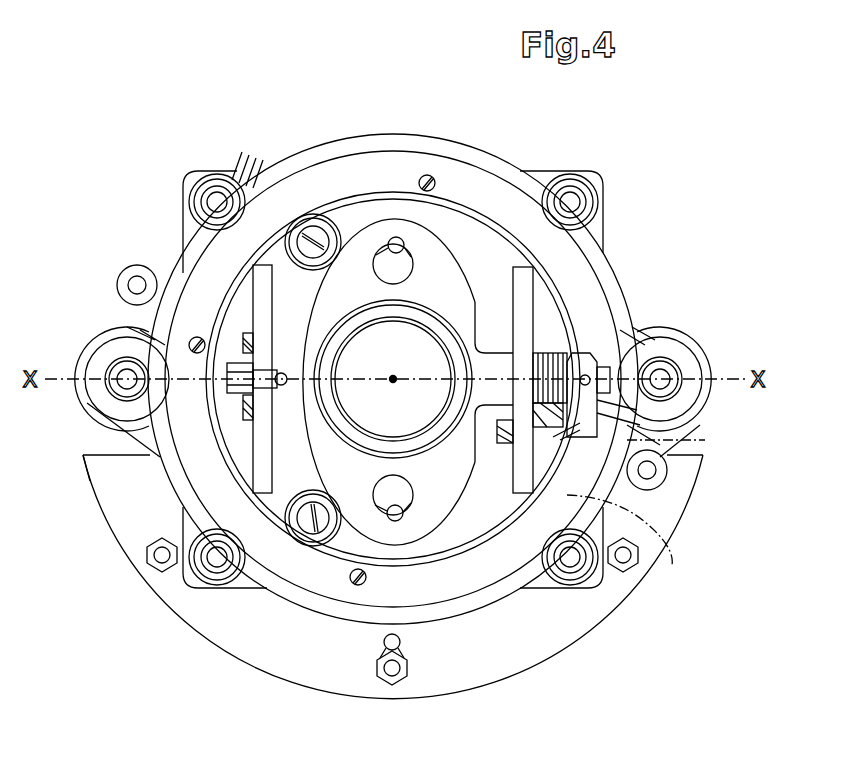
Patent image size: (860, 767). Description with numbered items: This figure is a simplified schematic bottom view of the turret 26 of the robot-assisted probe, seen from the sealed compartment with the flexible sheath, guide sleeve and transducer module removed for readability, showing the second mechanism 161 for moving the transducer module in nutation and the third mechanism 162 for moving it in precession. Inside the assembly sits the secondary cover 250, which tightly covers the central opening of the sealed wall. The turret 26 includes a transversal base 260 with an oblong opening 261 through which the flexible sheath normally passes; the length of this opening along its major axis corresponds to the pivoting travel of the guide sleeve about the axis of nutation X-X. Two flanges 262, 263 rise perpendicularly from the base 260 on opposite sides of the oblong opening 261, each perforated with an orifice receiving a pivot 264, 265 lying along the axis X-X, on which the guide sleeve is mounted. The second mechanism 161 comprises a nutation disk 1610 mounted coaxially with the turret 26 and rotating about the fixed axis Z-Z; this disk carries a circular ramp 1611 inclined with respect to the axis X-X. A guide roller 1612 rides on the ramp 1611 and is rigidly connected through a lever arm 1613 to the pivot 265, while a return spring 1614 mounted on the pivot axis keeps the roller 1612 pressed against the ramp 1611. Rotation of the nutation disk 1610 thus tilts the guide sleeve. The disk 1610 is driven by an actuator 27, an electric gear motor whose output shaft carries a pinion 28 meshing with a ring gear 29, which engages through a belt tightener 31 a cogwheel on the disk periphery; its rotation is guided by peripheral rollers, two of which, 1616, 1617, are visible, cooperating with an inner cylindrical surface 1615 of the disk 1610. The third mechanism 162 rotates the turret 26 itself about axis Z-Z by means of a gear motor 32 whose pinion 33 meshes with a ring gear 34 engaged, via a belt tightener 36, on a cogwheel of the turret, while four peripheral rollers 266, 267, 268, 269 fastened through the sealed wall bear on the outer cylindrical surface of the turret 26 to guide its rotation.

The turret 26 is at (474, 234).
The actuator 27 is at (95, 400).
The pinion 28 is at (107, 353).
The ring gear 29 is at (127, 323).
The belt tightener 31 is at (117, 283).
The gear motor 32 is at (708, 387).
The pinion 33 is at (672, 350).
The ring gear 34 is at (637, 310).
The belt tightener 36 is at (670, 457).
The second mechanism for moving in nutation 161 is at (595, 338).
The third mechanism for moving in precession 162 is at (718, 360).
The secondary cover 250 is at (404, 222).
The transversal base 260 is at (508, 487).
The oblong opening 261 is at (384, 208).
The flange 262 is at (265, 288).
The flange 263 is at (520, 262).
The pivot 264 is at (270, 435).
The pivot 265 is at (473, 308).
The peripheral roller 266 is at (205, 170).
The peripheral roller 267 is at (583, 172).
The peripheral roller 268 is at (557, 593).
The peripheral roller 269 is at (223, 590).
The nutation disk 1610 is at (607, 498).
The circular ramp 1611 is at (333, 136).
The guide roller 1612 is at (667, 472).
The lever arm 1613 is at (705, 440).
The return spring 1614 is at (480, 445).
The inner cylindrical surface 1615 is at (477, 507).
The peripheral roller 1616 is at (333, 540).
The peripheral roller 1617 is at (303, 213).